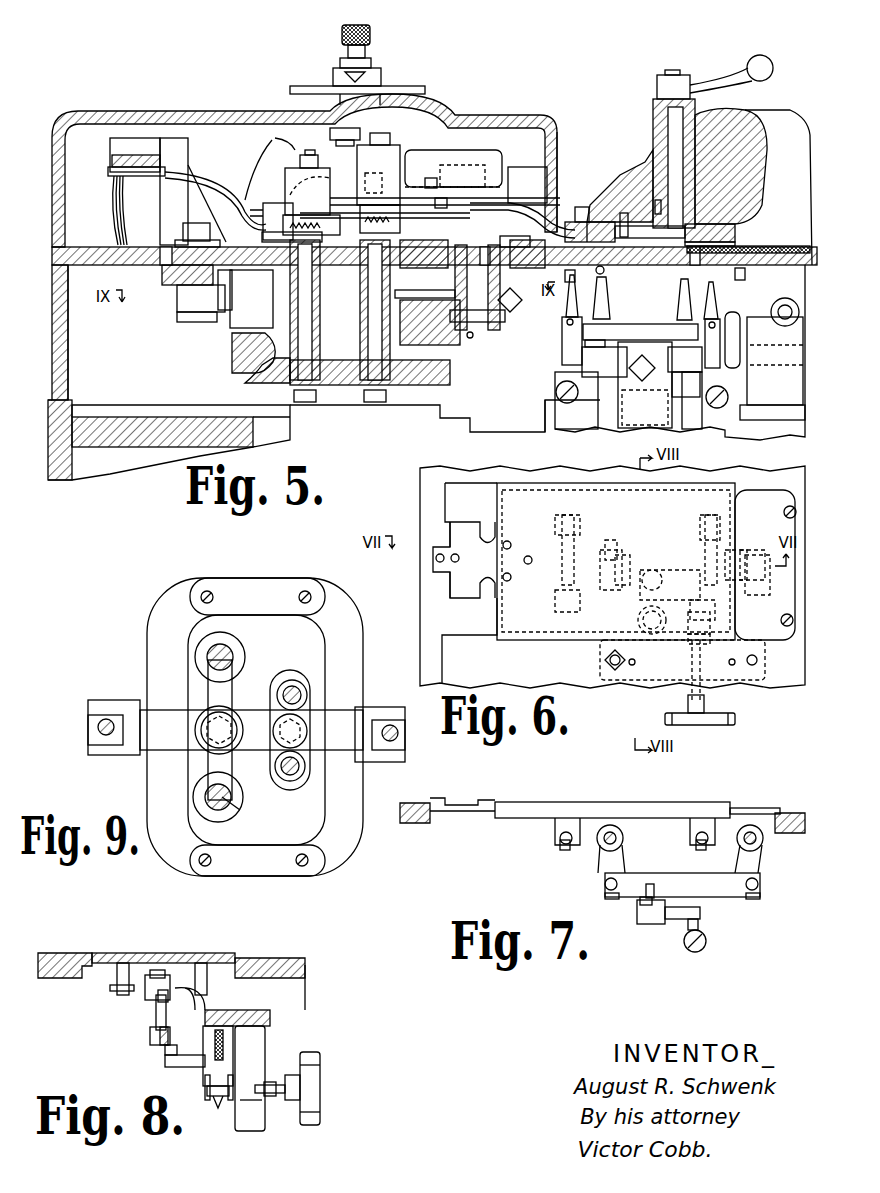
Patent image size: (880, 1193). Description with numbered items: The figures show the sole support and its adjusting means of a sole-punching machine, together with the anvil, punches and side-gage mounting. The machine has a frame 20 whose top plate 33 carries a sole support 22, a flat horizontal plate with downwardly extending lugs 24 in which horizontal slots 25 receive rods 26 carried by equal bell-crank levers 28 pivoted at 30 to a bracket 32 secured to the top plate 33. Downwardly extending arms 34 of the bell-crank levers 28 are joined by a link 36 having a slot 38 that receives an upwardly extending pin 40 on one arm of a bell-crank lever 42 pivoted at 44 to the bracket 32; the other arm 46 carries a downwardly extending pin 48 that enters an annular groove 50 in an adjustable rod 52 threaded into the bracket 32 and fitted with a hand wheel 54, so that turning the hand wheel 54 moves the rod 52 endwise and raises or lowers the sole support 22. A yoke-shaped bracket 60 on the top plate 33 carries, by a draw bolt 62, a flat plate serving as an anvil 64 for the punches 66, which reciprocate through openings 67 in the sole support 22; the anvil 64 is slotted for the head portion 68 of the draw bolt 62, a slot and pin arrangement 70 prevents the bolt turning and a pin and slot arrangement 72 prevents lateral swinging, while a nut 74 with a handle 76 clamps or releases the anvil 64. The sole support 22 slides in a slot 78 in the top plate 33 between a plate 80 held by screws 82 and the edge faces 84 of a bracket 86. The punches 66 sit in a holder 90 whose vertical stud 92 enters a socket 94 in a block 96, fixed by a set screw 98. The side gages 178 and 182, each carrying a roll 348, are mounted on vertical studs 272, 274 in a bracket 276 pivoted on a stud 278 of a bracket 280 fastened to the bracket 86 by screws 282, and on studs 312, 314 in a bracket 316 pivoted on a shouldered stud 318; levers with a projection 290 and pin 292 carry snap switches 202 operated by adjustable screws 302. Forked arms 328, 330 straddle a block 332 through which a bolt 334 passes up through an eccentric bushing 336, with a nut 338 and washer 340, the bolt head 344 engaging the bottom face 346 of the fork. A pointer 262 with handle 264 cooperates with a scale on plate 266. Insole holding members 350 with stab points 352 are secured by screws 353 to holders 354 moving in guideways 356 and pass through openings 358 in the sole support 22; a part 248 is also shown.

In FIG. 5, the frame 20 is at (62, 478).
In FIG. 5, the sole support 22 is at (786, 262).
In FIG. 7, the sole support 22 is at (630, 812).
In FIG. 8, the sole support 22 is at (215, 953).
In FIG. 5, the lugs 24 is at (776, 335).
In FIG. 6, the lugs 24 is at (585, 530).
In FIG. 7, the lugs 24 is at (553, 826).
In FIG. 8, the lugs 24 is at (120, 970).
In FIG. 5, the horizontal slots 25 is at (782, 302).
In FIG. 7, the horizontal slots 25 is at (560, 840).
In FIG. 5, the rods 26 is at (776, 339).
In FIG. 6, the rods 26 is at (580, 540).
In FIG. 7, the rods 26 is at (560, 846).
In FIG. 8, the rods 26 is at (110, 990).
In FIG. 5, the bell-crank levers 28 is at (776, 364).
In FIG. 6, the bell-crank levers 28 is at (630, 560).
In FIG. 7, the bell-crank levers 28 is at (620, 833).
In FIG. 8, the bell-crank levers 28 is at (155, 972).
In FIG. 6, the pivotal connection 30 is at (622, 548).
In FIG. 7, the pivotal connection 30 is at (618, 840).
In FIG. 8, the pivotal connection 30 is at (150, 1000).
In FIG. 6, the bracket 32 is at (600, 652).
In FIG. 8, the bracket 32 is at (270, 1020).
In FIG. 8, the top plate 33 is at (306, 972).
In FIG. 7, the arms 34 is at (758, 876).
In FIG. 8, the arms 34 is at (155, 1015).
In FIG. 6, the link 36 is at (724, 562).
In FIG. 7, the link 36 is at (728, 893).
In FIG. 8, the link 36 is at (150, 1035).
In FIG. 7, the slot 38 is at (650, 883).
In FIG. 6, the pin 40 is at (642, 590).
In FIG. 7, the pin 40 is at (640, 900).
In FIG. 8, the pin 40 is at (165, 1048).
In FIG. 7, the bell-crank lever 42 is at (640, 922).
In FIG. 8, the bell-crank lever 42 is at (200, 1065).
In FIG. 6, the pivotal connection 44 is at (638, 620).
In FIG. 8, the pivotal connection 44 is at (235, 1058).
In FIG. 7, the arm 46 is at (700, 913).
In FIG. 6, the pin 48 is at (712, 620).
In FIG. 7, the pin 48 is at (698, 926).
In FIG. 8, the pin 48 is at (207, 1085).
In FIG. 6, the annular groove 50 is at (680, 646).
In FIG. 8, the annular groove 50 is at (212, 1110).
In FIG. 6, the adjustable rod 52 is at (690, 668).
In FIG. 7, the adjustable rod 52 is at (705, 947).
In FIG. 8, the adjustable rod 52 is at (268, 1098).
In FIG. 6, the hand wheel 54 is at (735, 716).
In FIG. 8, the hand wheel 54 is at (320, 1093).
In FIG. 5, the yoke-shaped bracket 60 is at (750, 156).
In FIG. 5, the draw bolt 62 is at (674, 130).
In FIG. 5, the anvil 64 is at (735, 232).
In FIG. 5, the punches 66 is at (604, 292).
In FIG. 5, the openings 67 is at (614, 272).
In FIG. 6, the openings 67 is at (456, 553).
In FIG. 5, the head portion 68 is at (735, 216).
In FIG. 5, the slot and pin arrangement 70 is at (658, 204).
In FIG. 5, the pin and slot arrangement 72 is at (622, 212).
In FIG. 5, the nut 74 is at (656, 84).
In FIG. 5, the handle 76 is at (762, 58).
In FIG. 6, the slot 78 is at (455, 486).
In FIG. 8, the slot 78 is at (260, 965).
In FIG. 6, the plate 80 is at (772, 640).
In FIG. 7, the plate 80 is at (750, 808).
In FIG. 6, the screws 82 is at (786, 566).
In FIG. 7, the screws 82 is at (783, 812).
In FIG. 5, the edge faces 84 is at (561, 356).
In FIG. 6, the edge faces 84 is at (500, 495).
In FIG. 5, the bracket 86 is at (82, 262).
In FIG. 5, the holder 90 is at (648, 330).
In FIG. 5, the vertical stud 92 is at (660, 385).
In FIG. 5, the socket 94 is at (604, 360).
In FIG. 5, the block 96 is at (691, 400).
In FIG. 5, the set screw 98 is at (578, 400).
In FIG. 5, the side gage 178 is at (522, 202).
In FIG. 5, the side gage 182 is at (415, 238).
In FIG. 5, the snap switches 202 is at (400, 165).
In FIG. 5, the cover 248 is at (525, 165).
In FIG. 5, the pointer 262 is at (362, 78).
In FIG. 5, the handle 264 is at (370, 35).
In FIG. 5, the plate 266 is at (412, 94).
In FIG. 5, the vertical stud 272 is at (279, 266).
In FIG. 9, the vertical stud 272 is at (228, 802).
In FIG. 9, the vertical stud 274 is at (232, 655).
In FIG. 5, the bracket 276 is at (312, 314).
In FIG. 9, the bracket 276 is at (222, 820).
In FIG. 5, the vertical stud 278 is at (250, 366).
In FIG. 9, the vertical stud 278 is at (195, 728).
In FIG. 5, the bracket 280 is at (270, 385).
In FIG. 9, the bracket 280 is at (345, 843).
In FIG. 9, the screws 282 is at (207, 590).
In FIG. 5, the projection 290 is at (440, 216).
In FIG. 5, the pin 292 is at (467, 176).
In FIG. 5, the adjustable screws 302 is at (292, 166).
In FIG. 5, the vertical stud 312 is at (363, 125).
In FIG. 9, the vertical stud 312 is at (306, 767).
In FIG. 9, the vertical stud 314 is at (302, 690).
In FIG. 5, the bracket 316 is at (330, 386).
In FIG. 9, the bracket 316 is at (290, 785).
In FIG. 5, the shouldered stud 318 is at (375, 336).
In FIG. 9, the shouldered stud 318 is at (308, 732).
In FIG. 5, the arm 328 is at (251, 299).
In FIG. 5, the arm 330 is at (425, 312).
In FIG. 5, the block 332 is at (185, 300).
In FIG. 5, the bolt 334 is at (190, 226).
In FIG. 5, the eccentric bushing 336 is at (180, 280).
In FIG. 5, the nut 338 is at (180, 222).
In FIG. 5, the washer 340 is at (387, 236).
In FIG. 5, the head 344 is at (185, 318).
In FIG. 5, the bottom face 346 is at (228, 320).
In FIG. 5, the roll 348 is at (600, 212).
In FIG. 5, the members 350 is at (585, 310).
In FIG. 5, the stab points 352 is at (580, 292).
In FIG. 5, the screws 353 is at (752, 378).
In FIG. 5, the holders 354 is at (575, 383).
In FIG. 5, the guideways 356 is at (680, 358).
In FIG. 5, the openings 358 is at (660, 272).
In FIG. 6, the openings 358 is at (440, 553).